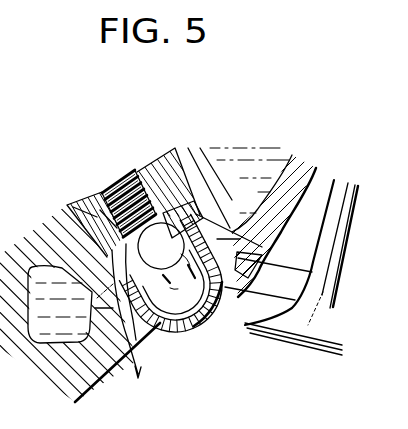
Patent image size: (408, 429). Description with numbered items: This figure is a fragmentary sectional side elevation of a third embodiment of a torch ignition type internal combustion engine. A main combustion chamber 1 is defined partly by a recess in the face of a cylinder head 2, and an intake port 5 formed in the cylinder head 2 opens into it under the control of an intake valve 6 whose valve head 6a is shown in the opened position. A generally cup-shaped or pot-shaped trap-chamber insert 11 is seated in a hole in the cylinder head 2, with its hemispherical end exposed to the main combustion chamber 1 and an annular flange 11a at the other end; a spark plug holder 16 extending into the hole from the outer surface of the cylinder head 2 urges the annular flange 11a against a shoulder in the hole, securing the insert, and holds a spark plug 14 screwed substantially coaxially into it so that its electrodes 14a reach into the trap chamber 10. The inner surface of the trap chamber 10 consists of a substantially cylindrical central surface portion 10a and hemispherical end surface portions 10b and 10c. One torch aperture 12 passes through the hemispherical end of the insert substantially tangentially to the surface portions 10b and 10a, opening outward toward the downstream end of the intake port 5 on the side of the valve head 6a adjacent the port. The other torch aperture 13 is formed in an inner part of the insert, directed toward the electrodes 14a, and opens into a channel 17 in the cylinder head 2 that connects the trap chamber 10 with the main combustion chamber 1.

The main combustion chamber 1 is at (242, 409).
The cylinder head 2 is at (51, 378).
The intake port 5 is at (316, 221).
The intake valve 6 is at (343, 266).
The valve head 6a is at (292, 332).
The trap chamber 10 is at (141, 327).
The cylindrical central surface portion 10a is at (228, 224).
The hemispherical end surface portion 10b is at (182, 322).
The hemispherical end surface portion 10c is at (100, 210).
The trap-chamber insert 11 is at (203, 330).
The annular flange 11a is at (176, 152).
The torch aperture 12 is at (232, 304).
The torch aperture 13 is at (108, 266).
The spark plug 14 is at (118, 176).
The electrodes 14a is at (90, 240).
The spark plug holder 16 is at (73, 207).
The channel 17 is at (123, 336).